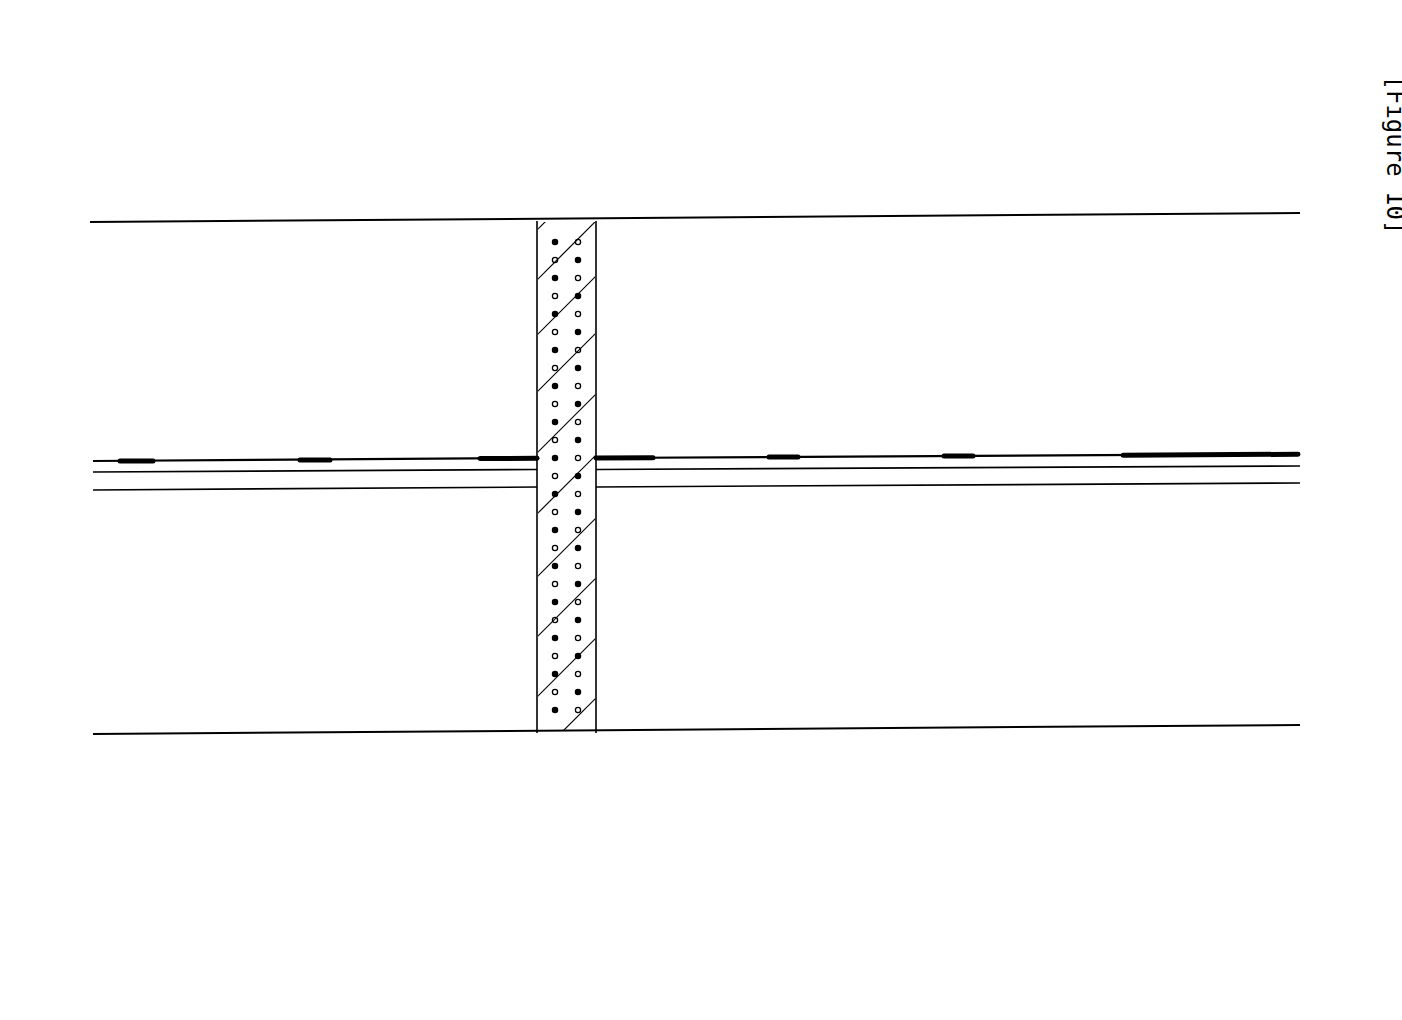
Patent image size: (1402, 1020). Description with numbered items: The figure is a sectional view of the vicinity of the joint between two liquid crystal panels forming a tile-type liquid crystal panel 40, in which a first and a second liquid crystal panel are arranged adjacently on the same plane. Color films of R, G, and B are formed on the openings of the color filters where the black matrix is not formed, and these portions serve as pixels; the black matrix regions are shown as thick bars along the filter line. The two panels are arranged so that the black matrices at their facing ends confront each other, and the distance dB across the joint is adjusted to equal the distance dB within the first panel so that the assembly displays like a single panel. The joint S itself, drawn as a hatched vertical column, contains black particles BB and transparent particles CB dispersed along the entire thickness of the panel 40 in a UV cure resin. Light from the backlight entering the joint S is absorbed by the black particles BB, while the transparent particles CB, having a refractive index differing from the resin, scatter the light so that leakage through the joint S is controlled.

The liquid crystal panel 40 is at (896, 186).
The joint S is at (569, 219).
The black particles BB is at (579, 261).
The transparent particles CB is at (553, 297).
The red color film R is at (696, 454).
The green color film G is at (548, 436).
The blue color film B is at (709, 440).
The distance between black matrices dB is at (477, 460).